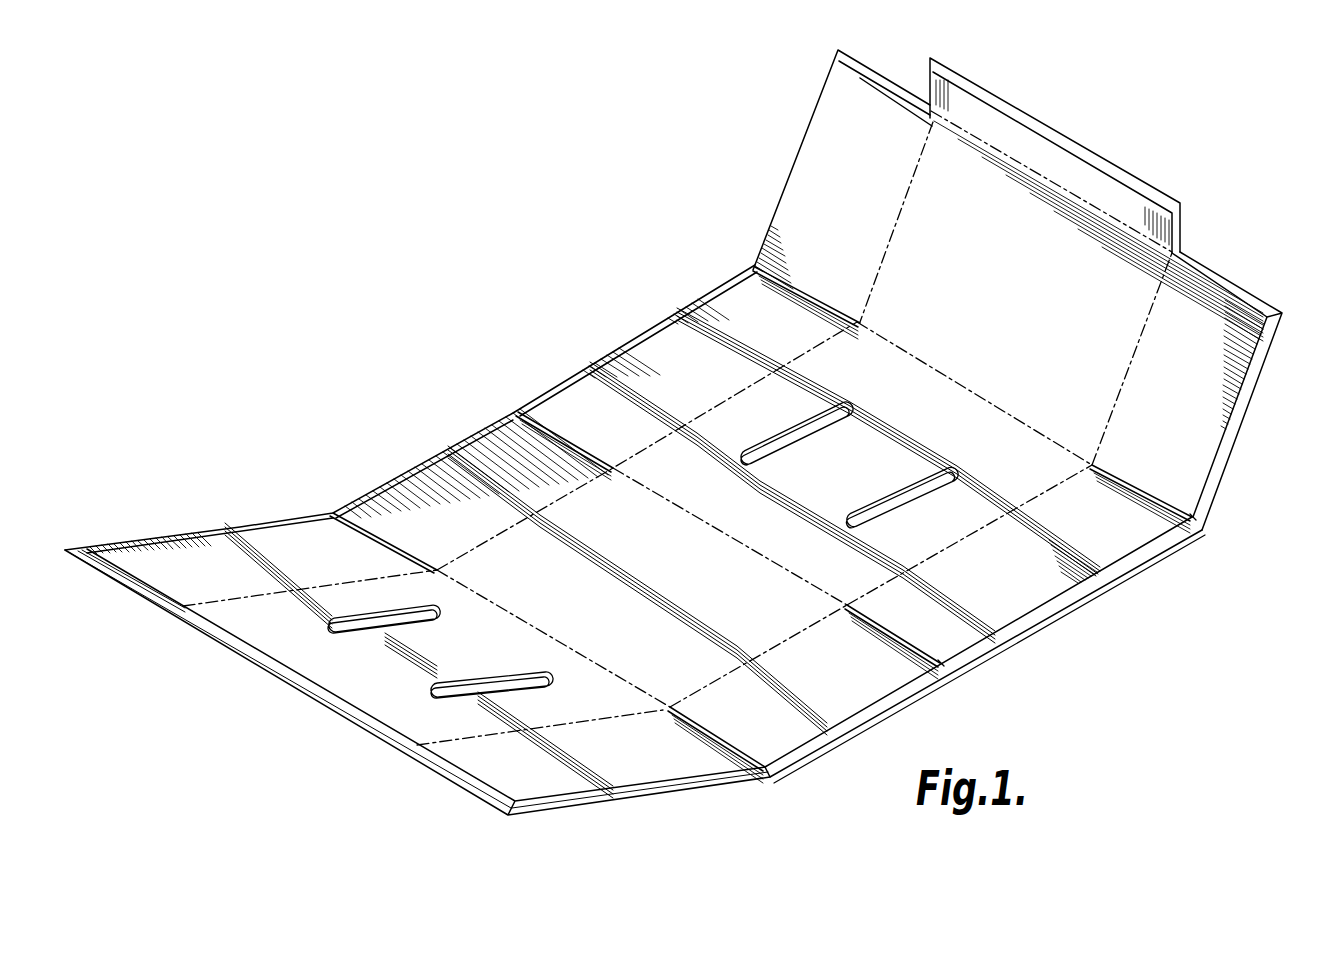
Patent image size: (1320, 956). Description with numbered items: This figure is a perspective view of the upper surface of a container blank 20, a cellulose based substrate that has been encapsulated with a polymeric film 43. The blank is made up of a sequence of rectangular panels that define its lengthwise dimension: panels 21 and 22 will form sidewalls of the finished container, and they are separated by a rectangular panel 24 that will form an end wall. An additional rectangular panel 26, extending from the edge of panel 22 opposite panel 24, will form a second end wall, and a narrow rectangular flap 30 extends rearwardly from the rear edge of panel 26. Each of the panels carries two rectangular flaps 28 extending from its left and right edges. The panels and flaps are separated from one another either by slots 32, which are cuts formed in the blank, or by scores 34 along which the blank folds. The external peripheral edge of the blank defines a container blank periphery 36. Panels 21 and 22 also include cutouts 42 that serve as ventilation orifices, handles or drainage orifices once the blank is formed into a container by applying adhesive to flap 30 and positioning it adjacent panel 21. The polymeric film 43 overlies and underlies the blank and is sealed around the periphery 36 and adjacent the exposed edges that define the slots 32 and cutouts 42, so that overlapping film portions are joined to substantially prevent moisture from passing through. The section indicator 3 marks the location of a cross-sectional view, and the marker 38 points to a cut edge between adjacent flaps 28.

The container blank 20 is at (384, 394).
The rectangular panel 21 is at (352, 665).
The rectangular panel 22 is at (916, 421).
The rectangular panel 24 is at (659, 569).
The additional rectangular panel 26 is at (997, 294).
The rectangular flaps 28 is at (836, 201).
The narrow rectangular flap 30 is at (1058, 178).
The slots 32 is at (1163, 506).
The scores 34 is at (550, 498).
The container blank periphery 36 is at (548, 395).
The slit 38 is at (607, 425).
The cutouts 42 is at (965, 474).
The polymeric film 43 is at (335, 508).
The section line 3- 3 is at (233, 520).